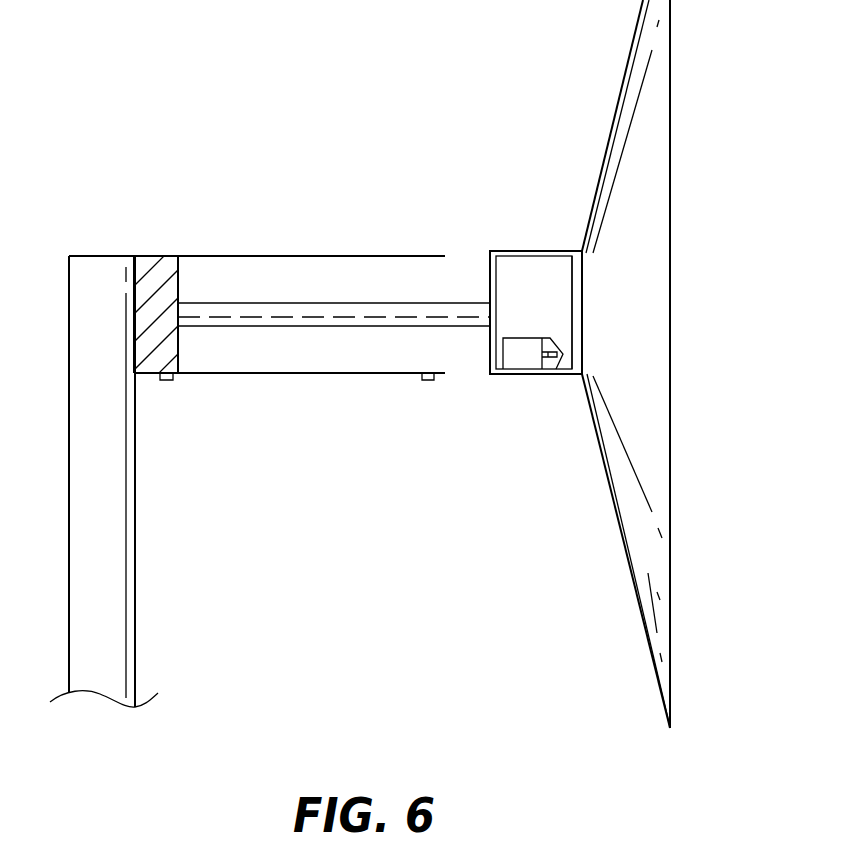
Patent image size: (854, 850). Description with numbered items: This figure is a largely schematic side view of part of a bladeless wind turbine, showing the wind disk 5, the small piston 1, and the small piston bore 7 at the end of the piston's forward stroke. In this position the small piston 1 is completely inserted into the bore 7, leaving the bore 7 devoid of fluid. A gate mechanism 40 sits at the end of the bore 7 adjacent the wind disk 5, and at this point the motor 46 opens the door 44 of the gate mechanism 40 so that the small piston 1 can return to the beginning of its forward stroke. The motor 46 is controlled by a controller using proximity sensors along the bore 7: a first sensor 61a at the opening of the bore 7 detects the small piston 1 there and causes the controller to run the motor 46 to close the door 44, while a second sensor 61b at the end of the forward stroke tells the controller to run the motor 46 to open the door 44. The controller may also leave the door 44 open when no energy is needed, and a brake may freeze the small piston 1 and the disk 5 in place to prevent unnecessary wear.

The small piston 1 is at (151, 265).
The small piston bore 7 is at (318, 276).
The wind disk 5 is at (670, 116).
The gate mechanism 40 is at (521, 223).
The door 44 is at (577, 358).
The motor 46 is at (530, 362).
The first sensor 61a is at (423, 382).
The second sensor 61b is at (162, 383).